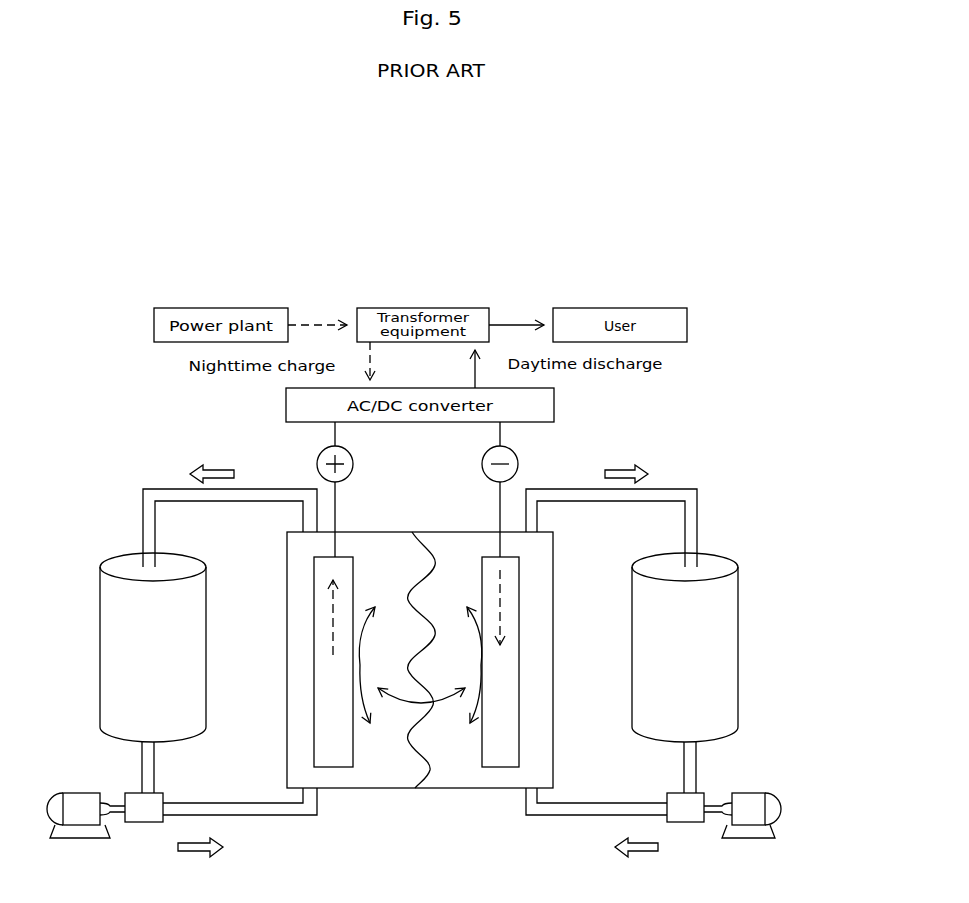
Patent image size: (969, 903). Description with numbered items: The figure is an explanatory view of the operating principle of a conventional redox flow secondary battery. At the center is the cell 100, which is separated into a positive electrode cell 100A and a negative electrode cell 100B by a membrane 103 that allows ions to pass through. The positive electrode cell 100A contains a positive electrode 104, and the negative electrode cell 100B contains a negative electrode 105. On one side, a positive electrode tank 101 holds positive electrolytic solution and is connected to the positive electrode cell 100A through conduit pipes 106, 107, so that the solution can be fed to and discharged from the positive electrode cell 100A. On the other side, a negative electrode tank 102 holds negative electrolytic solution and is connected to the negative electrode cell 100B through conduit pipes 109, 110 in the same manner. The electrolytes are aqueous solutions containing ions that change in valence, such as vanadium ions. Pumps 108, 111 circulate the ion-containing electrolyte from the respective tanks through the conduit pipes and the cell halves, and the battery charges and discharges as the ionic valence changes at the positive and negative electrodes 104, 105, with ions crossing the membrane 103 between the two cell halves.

The cell 100 is at (407, 530).
The positive electrode cell 100A is at (368, 789).
The negative electrode cell 100B is at (483, 789).
The positive electrode tank 101 is at (112, 560).
The negative electrode tank 102 is at (725, 560).
The membrane 103 is at (418, 789).
The positive electrode 104 is at (333, 768).
The negative electrode 105 is at (502, 768).
The conduit pipe 106 is at (273, 817).
The conduit pipe 107 is at (168, 487).
The pump 108 is at (83, 838).
The conduit pipe 109 is at (575, 817).
The conduit pipe 110 is at (682, 487).
The pump 111 is at (747, 838).